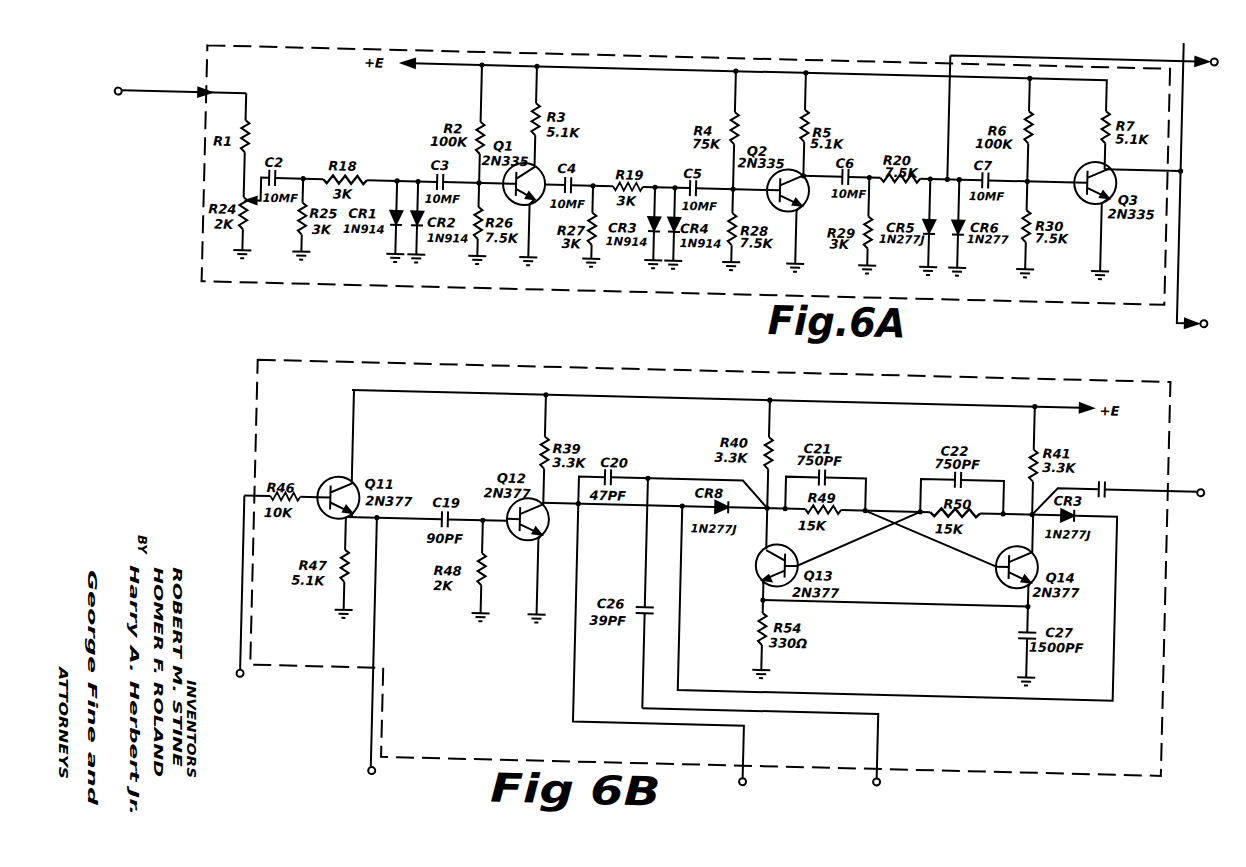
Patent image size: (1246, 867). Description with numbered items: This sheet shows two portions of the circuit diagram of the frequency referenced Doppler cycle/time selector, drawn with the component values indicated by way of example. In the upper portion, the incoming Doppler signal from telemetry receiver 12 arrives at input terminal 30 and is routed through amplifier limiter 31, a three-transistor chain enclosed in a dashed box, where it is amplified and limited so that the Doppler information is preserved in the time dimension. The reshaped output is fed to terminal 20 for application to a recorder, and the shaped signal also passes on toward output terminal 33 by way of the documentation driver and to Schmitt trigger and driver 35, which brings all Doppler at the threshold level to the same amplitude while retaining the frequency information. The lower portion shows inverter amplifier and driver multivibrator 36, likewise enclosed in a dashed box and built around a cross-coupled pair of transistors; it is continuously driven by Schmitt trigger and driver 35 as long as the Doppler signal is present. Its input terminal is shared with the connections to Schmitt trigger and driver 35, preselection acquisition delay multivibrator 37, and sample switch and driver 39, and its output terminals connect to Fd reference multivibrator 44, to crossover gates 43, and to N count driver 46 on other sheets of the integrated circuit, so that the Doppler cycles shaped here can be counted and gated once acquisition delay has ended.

In FIG. 6A, the input terminal 30 is at (117, 94).
In FIG. 6A, the telemetry receiver 12 is at (152, 114).
In FIG. 6A, the amplifier limiter 31 is at (676, 294).
In FIG. 6A, the terminal 20 is at (1186, 30).
In FIG. 6A, the output terminal 33 is at (1158, 206).
In FIG. 6B, the inverter amplifier and driver multivibrator 36 is at (1097, 758).
In FIG. 6B, the Schmitt trigger and driver 35 is at (292, 642).
In FIG. 6B, the preselection acquisition delay multivibrator 37 is at (288, 642).
In FIG. 6B, the sample switch and driver 39 is at (288, 642).
In FIG. 6B, the N count driver 46 is at (425, 665).
In FIG. 6B, the Fd reference multivibrator 44 is at (904, 651).
In FIG. 6B, the crossover gates 43 is at (813, 772).